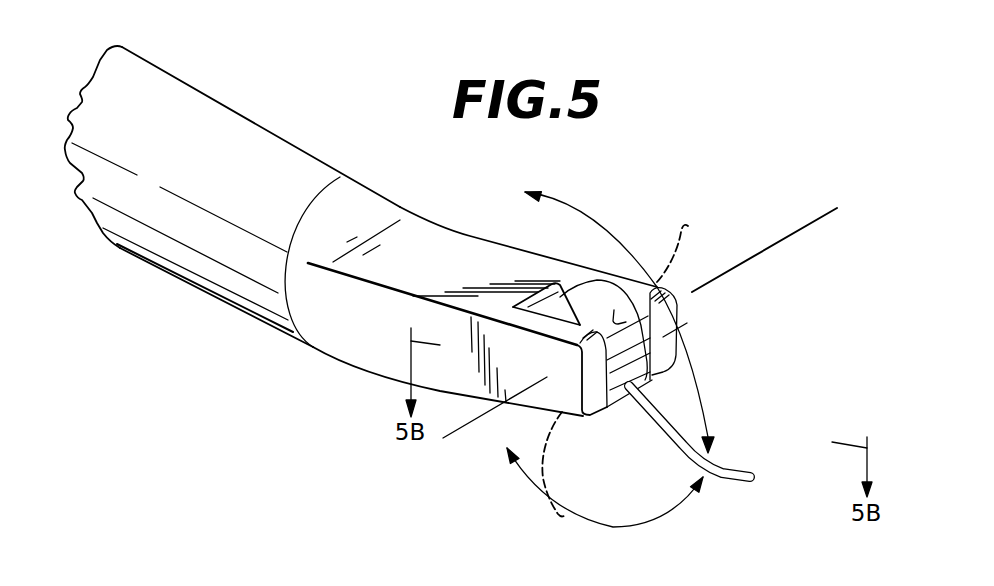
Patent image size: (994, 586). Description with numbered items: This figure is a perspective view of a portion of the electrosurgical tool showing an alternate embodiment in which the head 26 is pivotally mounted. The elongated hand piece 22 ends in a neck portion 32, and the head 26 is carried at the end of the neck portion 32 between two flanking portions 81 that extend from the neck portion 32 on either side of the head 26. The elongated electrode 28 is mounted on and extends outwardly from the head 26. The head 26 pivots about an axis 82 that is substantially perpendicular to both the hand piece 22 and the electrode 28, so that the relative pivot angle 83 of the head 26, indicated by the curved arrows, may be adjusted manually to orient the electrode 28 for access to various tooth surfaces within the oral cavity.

The hand piece 22 is at (213, 107).
The neck portion 32 is at (377, 359).
The head 26 is at (591, 292).
The electrode 28 is at (733, 467).
The flanking portions 81 is at (668, 336).
The axis 82 is at (767, 250).
The pivot angle 83 is at (705, 387).